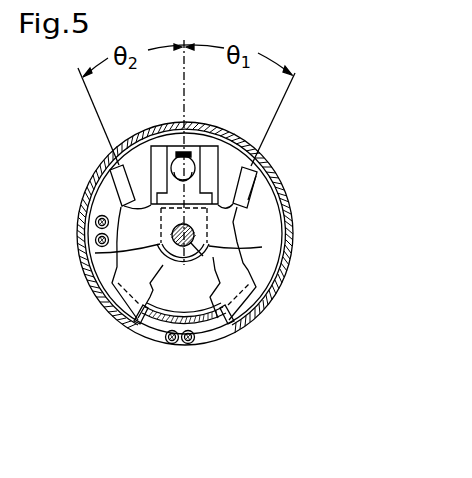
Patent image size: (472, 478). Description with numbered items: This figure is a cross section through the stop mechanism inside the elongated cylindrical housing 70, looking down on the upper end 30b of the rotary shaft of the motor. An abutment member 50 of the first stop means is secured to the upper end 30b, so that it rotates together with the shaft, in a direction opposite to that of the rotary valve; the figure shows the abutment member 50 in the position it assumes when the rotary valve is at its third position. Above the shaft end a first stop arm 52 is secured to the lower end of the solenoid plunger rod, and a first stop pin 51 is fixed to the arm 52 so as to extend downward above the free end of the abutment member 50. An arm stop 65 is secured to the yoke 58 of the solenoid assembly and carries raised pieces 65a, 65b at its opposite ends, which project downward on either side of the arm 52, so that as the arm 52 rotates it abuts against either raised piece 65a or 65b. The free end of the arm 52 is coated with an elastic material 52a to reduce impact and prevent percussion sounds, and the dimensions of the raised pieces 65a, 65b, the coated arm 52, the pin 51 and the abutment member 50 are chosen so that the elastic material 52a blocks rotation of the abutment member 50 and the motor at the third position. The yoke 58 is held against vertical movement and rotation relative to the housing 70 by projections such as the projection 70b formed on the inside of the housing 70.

The upper end of the rotary shaft of the motor 30b is at (232, 310).
The abutment member 50 is at (96, 243).
The first stop pin 51 is at (152, 146).
The first stop arm 52 is at (153, 308).
The elastic material 52a is at (262, 247).
The yoke 58 is at (248, 293).
The arm stop 65 is at (258, 170).
The raised piece 65a is at (250, 200).
The raised piece 65b is at (114, 182).
The elongated cylindrical housing 70 is at (110, 306).
The projection 70b is at (208, 345).